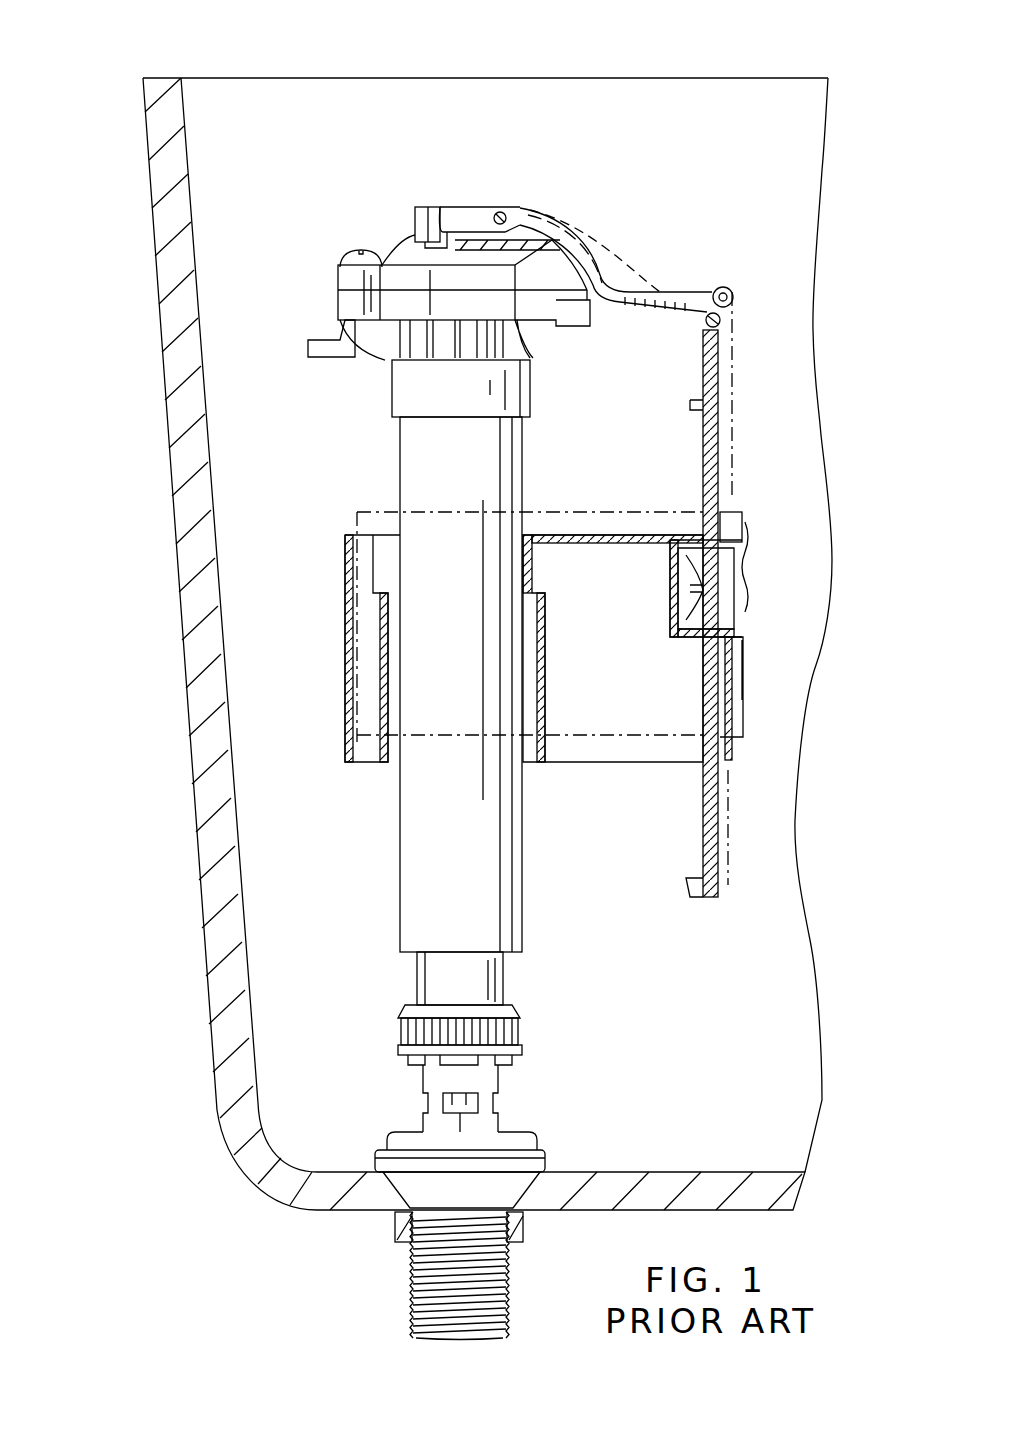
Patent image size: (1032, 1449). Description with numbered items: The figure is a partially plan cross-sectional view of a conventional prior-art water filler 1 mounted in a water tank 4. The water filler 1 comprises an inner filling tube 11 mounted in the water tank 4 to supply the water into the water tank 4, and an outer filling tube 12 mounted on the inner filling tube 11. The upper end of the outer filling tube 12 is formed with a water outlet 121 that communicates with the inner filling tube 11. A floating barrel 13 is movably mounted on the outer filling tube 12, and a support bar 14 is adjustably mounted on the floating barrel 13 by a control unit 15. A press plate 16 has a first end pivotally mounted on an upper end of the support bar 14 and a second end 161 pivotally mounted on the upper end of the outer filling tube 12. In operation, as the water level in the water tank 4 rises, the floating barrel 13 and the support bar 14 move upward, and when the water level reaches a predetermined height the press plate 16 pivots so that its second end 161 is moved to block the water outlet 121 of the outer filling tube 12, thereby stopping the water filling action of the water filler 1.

The water filler 1 is at (347, 463).
The water tank 4 is at (157, 235).
The inner filling tube 11 is at (443, 967).
The outer filling tube 12 is at (422, 437).
The floating barrel 13 is at (350, 677).
The support bar 14 is at (718, 468).
The control unit 15 is at (727, 616).
The press plate 16 is at (605, 248).
The water outlet 121 is at (413, 240).
The second end 161 is at (443, 230).